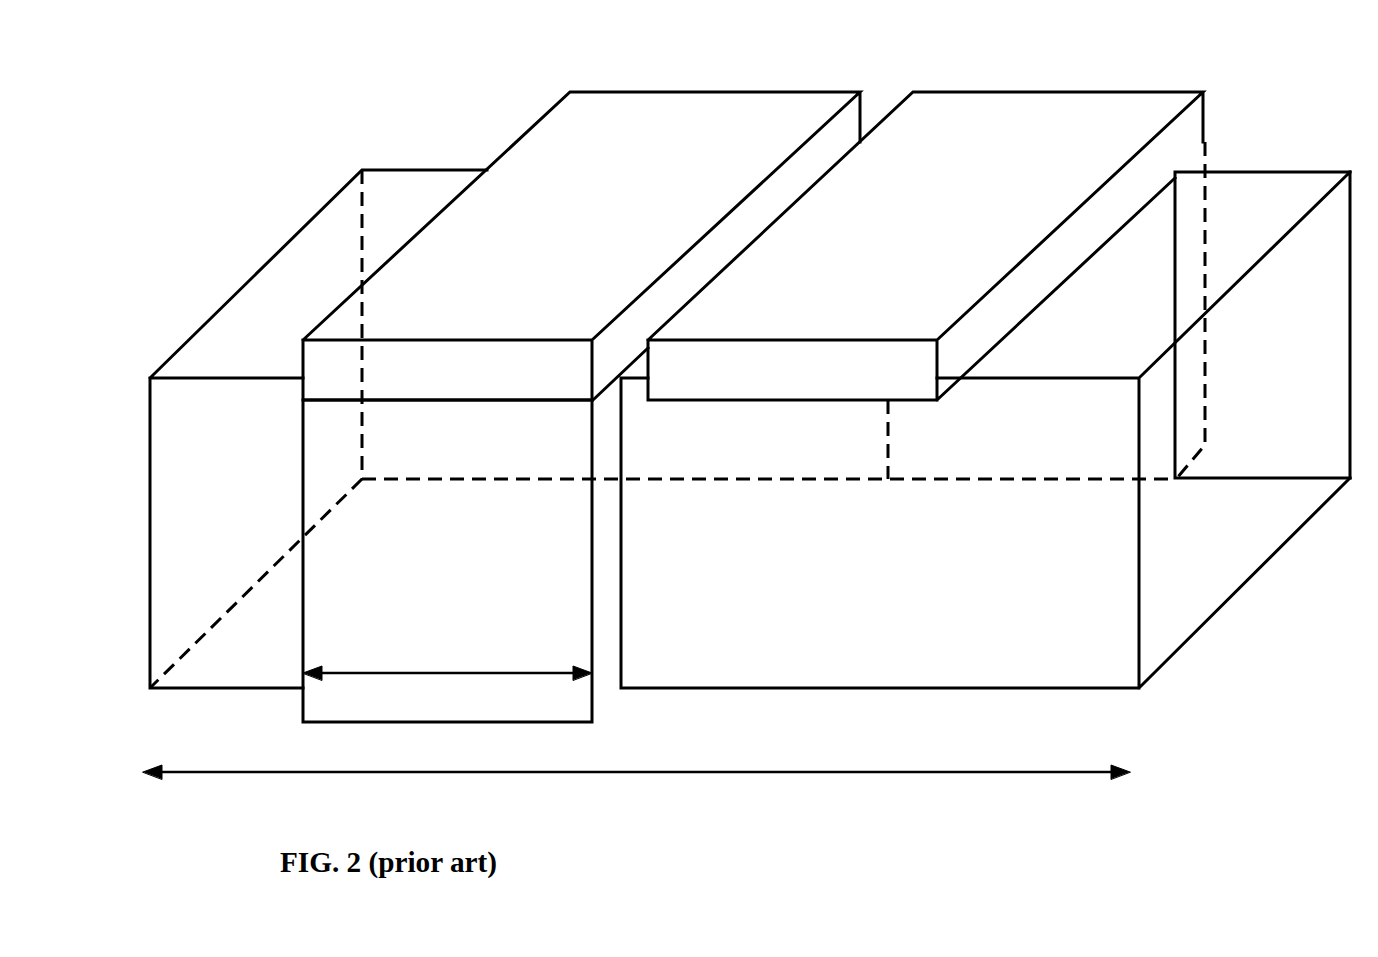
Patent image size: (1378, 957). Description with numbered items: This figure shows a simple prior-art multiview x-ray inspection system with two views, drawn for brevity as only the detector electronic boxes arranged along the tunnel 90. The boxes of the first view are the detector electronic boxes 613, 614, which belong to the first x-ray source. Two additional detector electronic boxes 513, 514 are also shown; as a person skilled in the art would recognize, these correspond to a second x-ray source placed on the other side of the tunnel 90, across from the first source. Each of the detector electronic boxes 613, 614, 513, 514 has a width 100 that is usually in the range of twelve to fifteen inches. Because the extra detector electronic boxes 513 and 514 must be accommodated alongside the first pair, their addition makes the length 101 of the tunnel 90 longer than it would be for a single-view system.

The tunnel 90 is at (1193, 510).
The width of the detector electronic boxes 100 is at (378, 680).
The length of the tunnel 101 is at (807, 780).
The detector electronic box 513 is at (960, 118).
The detector electronic box 514 is at (1193, 212).
The detector electronic box 613 is at (607, 125).
The detector electronic box 614 is at (573, 566).